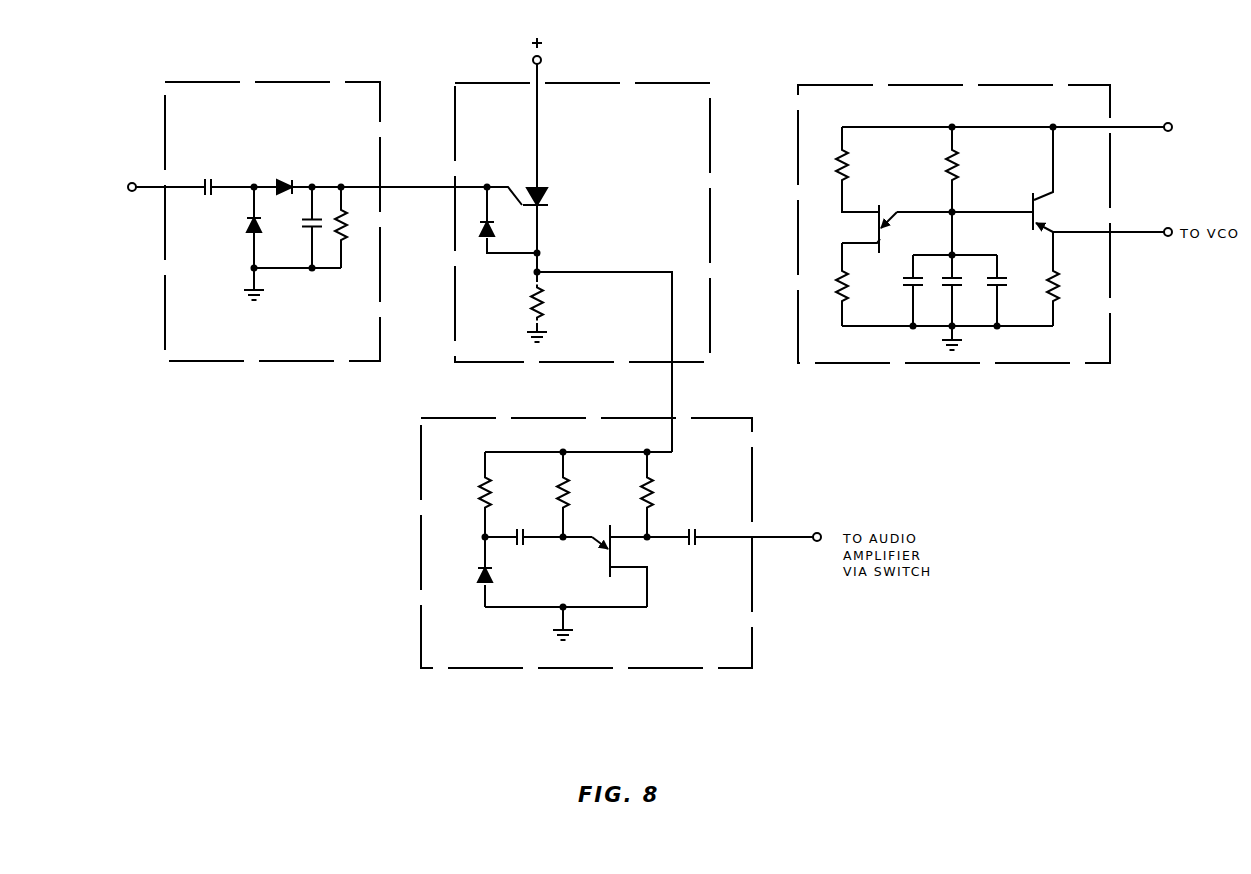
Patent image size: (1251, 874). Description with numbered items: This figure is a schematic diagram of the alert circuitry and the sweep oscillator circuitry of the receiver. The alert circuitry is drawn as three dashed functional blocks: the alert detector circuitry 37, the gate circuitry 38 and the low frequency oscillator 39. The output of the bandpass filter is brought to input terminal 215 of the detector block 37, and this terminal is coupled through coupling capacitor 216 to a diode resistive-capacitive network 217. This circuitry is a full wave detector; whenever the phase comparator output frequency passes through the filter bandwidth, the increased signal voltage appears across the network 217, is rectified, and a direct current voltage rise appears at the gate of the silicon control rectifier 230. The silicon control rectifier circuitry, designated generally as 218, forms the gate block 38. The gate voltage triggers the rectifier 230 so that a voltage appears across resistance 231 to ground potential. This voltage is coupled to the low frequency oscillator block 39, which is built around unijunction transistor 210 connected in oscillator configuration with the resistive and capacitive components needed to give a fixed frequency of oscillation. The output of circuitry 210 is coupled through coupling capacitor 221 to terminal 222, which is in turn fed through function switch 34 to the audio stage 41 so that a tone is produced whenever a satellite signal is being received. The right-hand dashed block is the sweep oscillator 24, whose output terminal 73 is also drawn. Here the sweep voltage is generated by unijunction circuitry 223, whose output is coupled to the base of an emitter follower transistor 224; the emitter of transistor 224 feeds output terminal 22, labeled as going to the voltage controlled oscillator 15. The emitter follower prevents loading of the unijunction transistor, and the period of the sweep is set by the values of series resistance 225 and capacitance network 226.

The alert detector circuitry functional block 37 is at (280, 82).
The input terminal 215 is at (130, 182).
The coupling capacitor 216 is at (214, 184).
The diode resistive-capacitive network 217 is at (329, 274).
The gate circuitry functional block 38 is at (612, 83).
The silicon control rectifier 230 is at (521, 194).
The silicon control rectifier circuitry 218 is at (545, 233).
The resistance 231 is at (543, 308).
The sweep oscillator functional block 24 is at (1023, 85).
The output terminal 73 is at (1165, 123).
The output terminal 22 is at (1165, 228).
The voltage controlled oscillator (VCO) 15 is at (1210, 247).
The unijunction circuitry 223 is at (859, 203).
The transistor 224 is at (1036, 194).
The series resistance 225 is at (956, 162).
The capacitance network 226 is at (968, 250).
The low frequency oscillator functional block 39 is at (677, 668).
The coupling capacitor 221 is at (704, 524).
The terminal 222 is at (815, 532).
The unijunction transistor 210 is at (602, 558).
The audio oscillator 41 is at (959, 555).
The function switch 34 is at (971, 572).